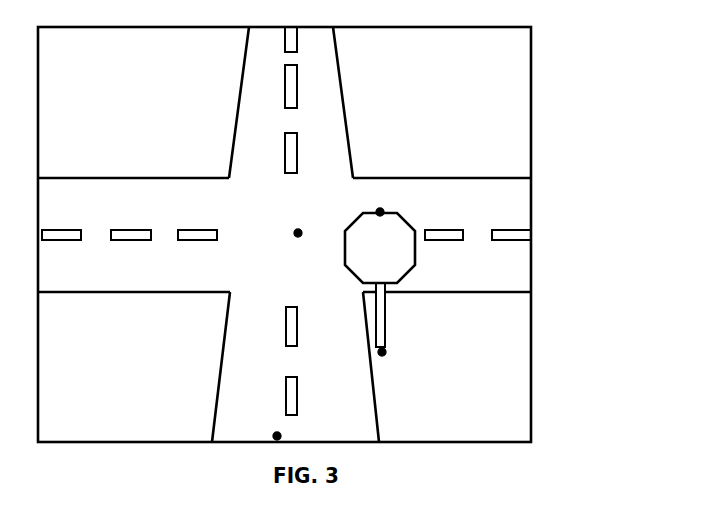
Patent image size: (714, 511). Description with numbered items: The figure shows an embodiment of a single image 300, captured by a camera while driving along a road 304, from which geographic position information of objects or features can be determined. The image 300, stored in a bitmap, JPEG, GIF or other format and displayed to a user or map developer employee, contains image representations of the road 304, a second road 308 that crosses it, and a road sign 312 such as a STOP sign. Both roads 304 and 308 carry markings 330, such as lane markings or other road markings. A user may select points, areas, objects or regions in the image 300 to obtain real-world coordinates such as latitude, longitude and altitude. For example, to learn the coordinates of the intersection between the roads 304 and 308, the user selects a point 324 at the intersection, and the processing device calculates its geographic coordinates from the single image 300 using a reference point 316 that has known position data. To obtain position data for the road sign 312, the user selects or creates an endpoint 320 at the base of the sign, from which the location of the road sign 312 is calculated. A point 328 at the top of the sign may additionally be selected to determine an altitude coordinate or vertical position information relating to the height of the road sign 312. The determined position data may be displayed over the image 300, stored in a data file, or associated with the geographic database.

The image 300 is at (531, 98).
The road 304 is at (258, 122).
The road 308 is at (192, 198).
The road sign 312 is at (385, 302).
The reference point 316 is at (277, 436).
The endpoint 320 is at (382, 352).
The point 324 is at (298, 233).
The point 328 is at (380, 212).
The markings 330 is at (283, 333).